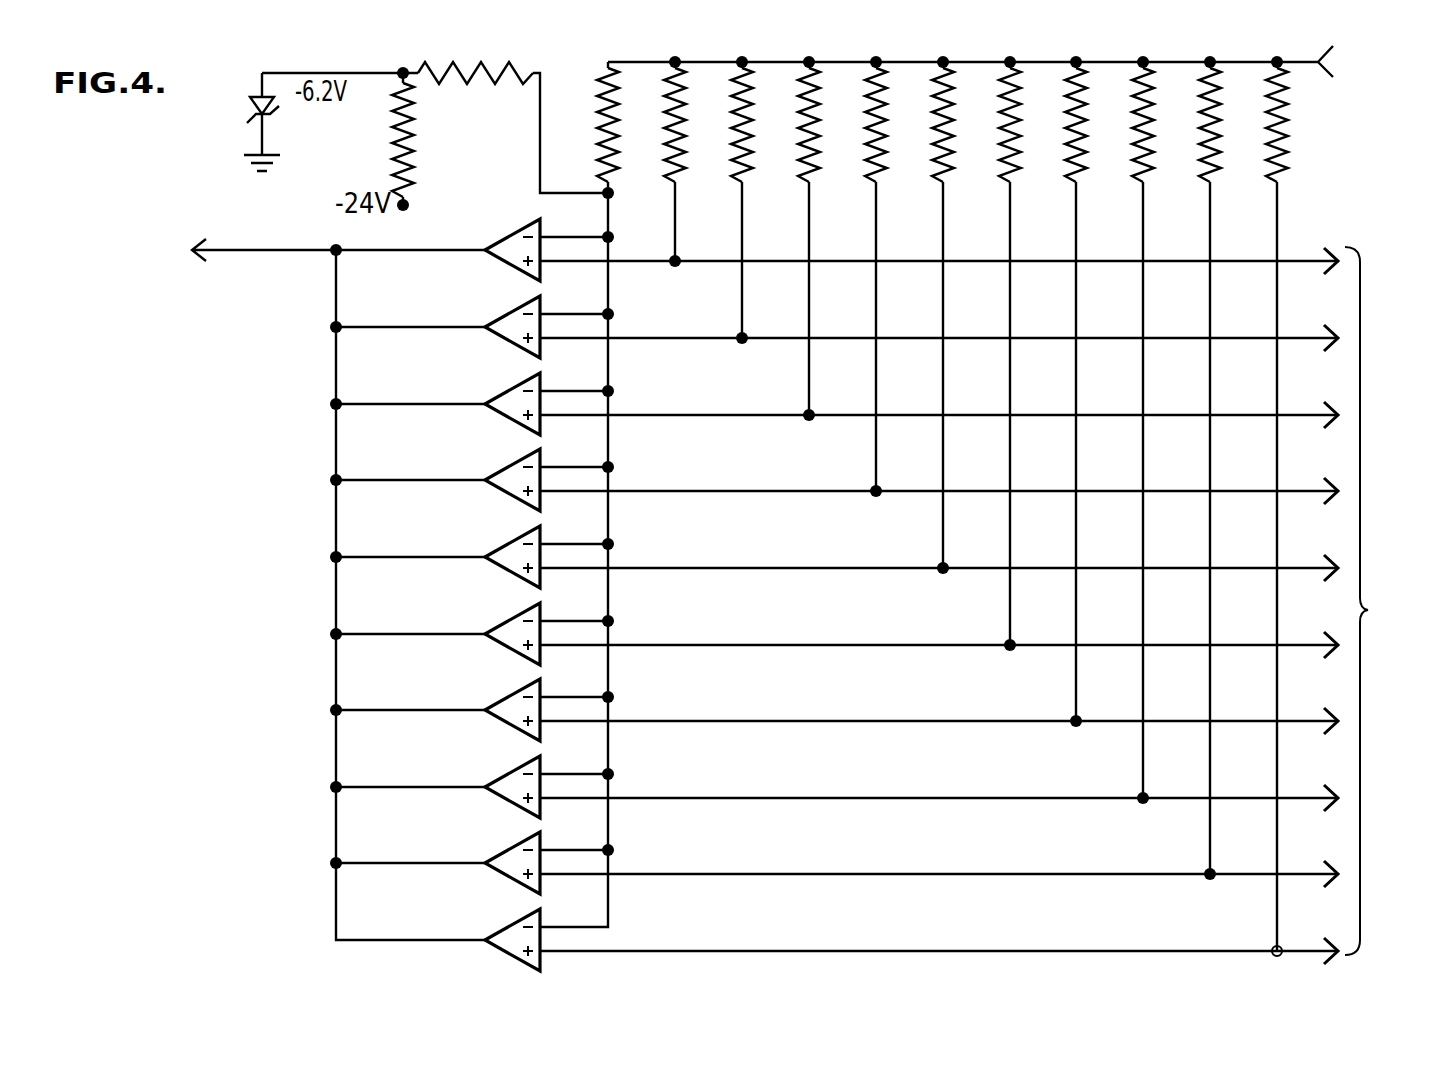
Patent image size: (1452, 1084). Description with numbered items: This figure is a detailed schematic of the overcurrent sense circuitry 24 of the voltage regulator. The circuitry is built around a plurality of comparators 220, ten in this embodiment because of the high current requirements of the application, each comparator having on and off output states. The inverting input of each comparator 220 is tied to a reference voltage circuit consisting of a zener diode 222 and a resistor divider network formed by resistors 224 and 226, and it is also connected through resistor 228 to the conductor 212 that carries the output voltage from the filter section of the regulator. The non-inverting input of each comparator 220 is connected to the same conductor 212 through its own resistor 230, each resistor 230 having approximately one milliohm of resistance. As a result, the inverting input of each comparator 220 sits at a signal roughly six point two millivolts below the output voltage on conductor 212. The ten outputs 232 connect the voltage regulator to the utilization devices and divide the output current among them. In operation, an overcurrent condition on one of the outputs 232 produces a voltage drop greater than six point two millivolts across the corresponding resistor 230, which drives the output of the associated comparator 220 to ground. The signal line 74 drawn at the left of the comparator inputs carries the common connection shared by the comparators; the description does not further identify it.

The overcurrent sense circuitry 24 is at (167, 568).
The input signal line 74 is at (279, 254).
The conductor 212 is at (1301, 63).
The comparators 220 is at (510, 232).
The zener diode 222 is at (250, 109).
The resistor 224 is at (470, 84).
The resistor 226 is at (396, 159).
The resistor 228 is at (599, 145).
The resistors 230 is at (665, 142).
The outputs 232 is at (975, 605).